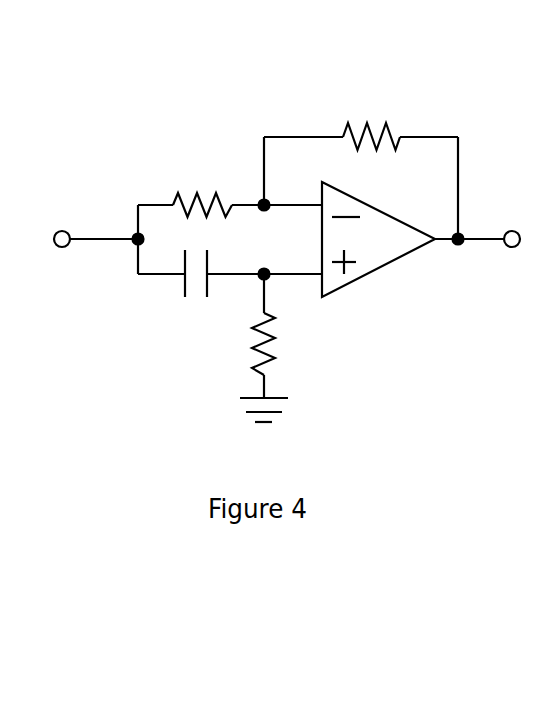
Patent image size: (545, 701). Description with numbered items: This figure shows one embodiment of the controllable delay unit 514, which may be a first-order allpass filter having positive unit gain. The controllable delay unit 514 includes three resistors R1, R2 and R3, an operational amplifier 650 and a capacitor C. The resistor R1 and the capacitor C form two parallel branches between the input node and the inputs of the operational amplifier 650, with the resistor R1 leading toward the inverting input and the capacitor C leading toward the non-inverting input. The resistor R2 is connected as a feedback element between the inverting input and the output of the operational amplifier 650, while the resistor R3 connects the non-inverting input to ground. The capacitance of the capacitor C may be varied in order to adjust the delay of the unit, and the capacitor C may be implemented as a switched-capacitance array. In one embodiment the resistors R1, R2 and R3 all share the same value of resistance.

The controllable delay unit 514 is at (178, 53).
The operational amplifier 650 is at (371, 277).
The resistor R1 is at (202, 185).
The resistor R2 is at (371, 114).
The resistor R3 is at (286, 344).
The capacitor C is at (196, 289).